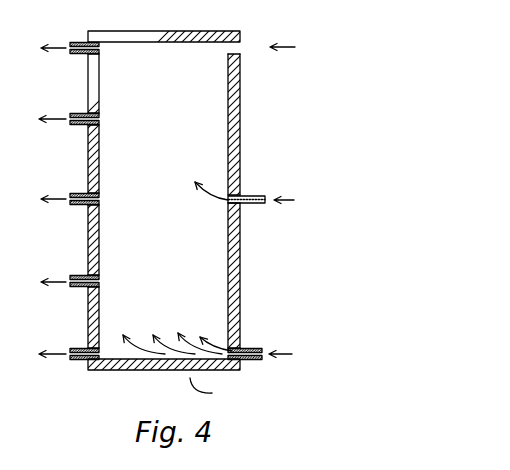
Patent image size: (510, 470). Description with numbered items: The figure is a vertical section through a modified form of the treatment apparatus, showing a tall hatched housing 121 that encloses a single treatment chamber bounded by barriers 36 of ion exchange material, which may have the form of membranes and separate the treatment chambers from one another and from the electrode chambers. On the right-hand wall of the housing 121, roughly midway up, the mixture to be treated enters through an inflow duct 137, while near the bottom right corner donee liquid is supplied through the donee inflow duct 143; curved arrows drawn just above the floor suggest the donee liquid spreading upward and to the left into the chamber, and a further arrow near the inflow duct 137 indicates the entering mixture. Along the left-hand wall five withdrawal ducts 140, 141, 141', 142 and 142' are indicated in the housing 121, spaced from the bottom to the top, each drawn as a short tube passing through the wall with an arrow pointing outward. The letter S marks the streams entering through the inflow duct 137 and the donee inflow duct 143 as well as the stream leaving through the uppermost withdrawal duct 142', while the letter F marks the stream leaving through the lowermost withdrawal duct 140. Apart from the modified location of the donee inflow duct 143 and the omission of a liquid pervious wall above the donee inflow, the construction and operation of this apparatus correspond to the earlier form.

The barrier 36 is at (173, 163).
The withdrawal duct 142' is at (64, 33).
The withdrawal duct 142 is at (72, 108).
The withdrawal duct 141' is at (74, 188).
The withdrawal duct 141 is at (73, 269).
The withdrawal duct 140 is at (86, 350).
The donee inflow duct 143 is at (249, 349).
The inflow duct 137 is at (249, 196).
The housing 121 is at (178, 369).
The solvent flow S is at (168, 199).
The feed flow F is at (43, 355).